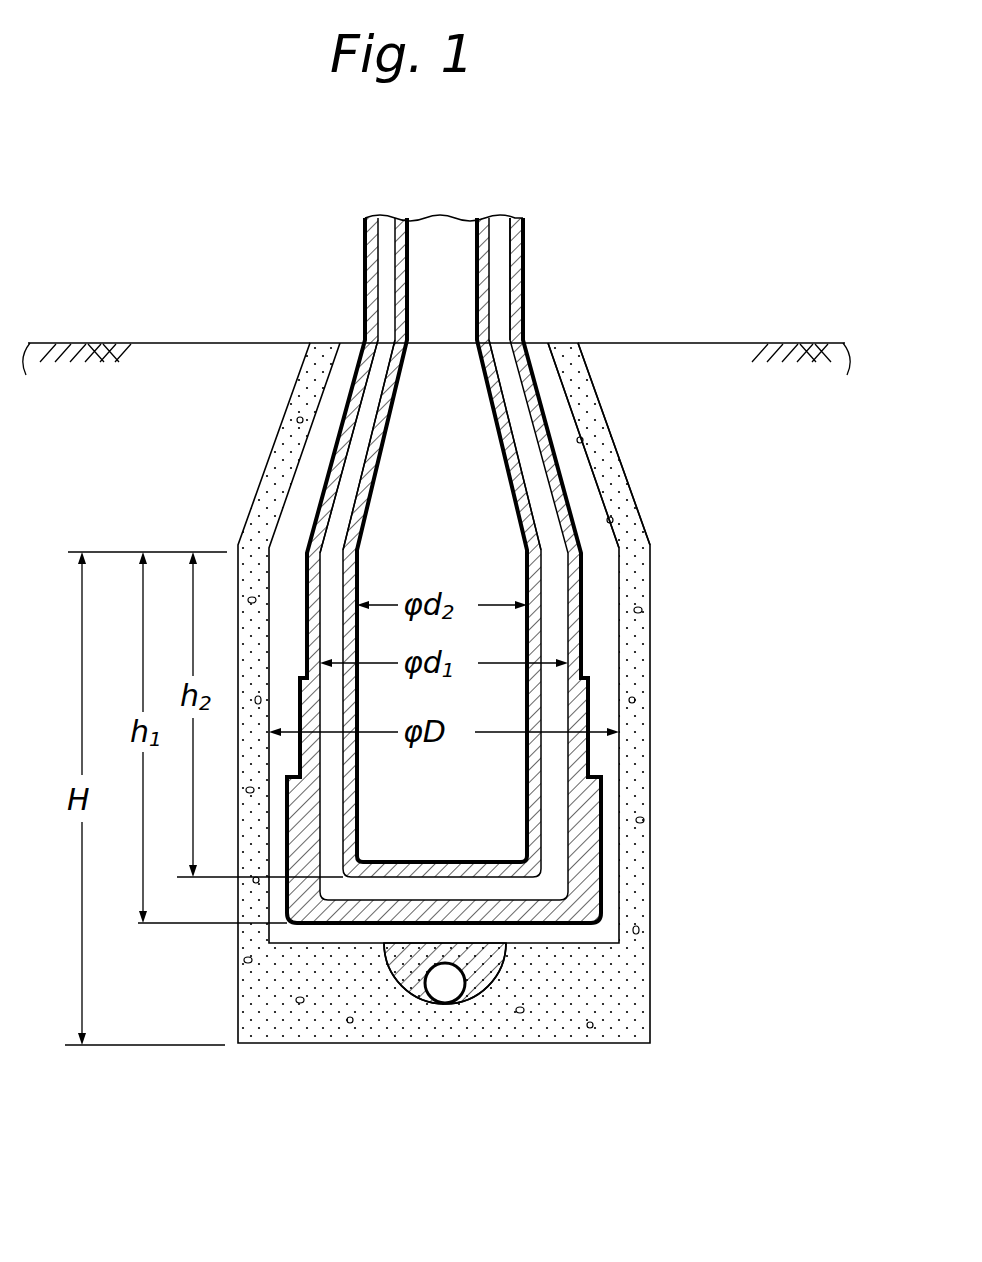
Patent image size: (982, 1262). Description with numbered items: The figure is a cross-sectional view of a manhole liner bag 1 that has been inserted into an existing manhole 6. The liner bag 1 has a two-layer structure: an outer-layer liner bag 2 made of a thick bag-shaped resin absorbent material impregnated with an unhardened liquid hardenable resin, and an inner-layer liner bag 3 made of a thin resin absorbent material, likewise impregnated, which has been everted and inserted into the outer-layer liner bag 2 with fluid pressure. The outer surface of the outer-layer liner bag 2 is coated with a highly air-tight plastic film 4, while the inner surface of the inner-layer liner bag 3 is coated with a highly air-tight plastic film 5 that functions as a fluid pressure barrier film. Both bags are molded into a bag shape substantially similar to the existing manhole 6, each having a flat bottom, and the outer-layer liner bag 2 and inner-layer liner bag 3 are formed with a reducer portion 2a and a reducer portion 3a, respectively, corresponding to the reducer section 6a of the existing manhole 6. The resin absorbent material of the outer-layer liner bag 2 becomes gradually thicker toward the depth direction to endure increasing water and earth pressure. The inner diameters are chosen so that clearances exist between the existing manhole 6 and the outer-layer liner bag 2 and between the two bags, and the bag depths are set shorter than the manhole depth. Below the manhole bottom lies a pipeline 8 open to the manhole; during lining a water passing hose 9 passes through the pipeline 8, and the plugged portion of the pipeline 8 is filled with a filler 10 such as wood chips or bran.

The liner bag 1 is at (533, 250).
The outer-layer liner bag 2 is at (360, 289).
The reducer portion 2a is at (330, 455).
The inner-layer liner bag 3 is at (386, 420).
The reducer portion 3a is at (510, 422).
The plastic film 4 is at (525, 306).
The plastic film 5 is at (376, 487).
The existing manhole 6 is at (632, 630).
The reducer section 6a is at (612, 478).
The pipeline 8 is at (410, 988).
The water passing hose 9 is at (440, 1004).
The filler 10 is at (480, 990).